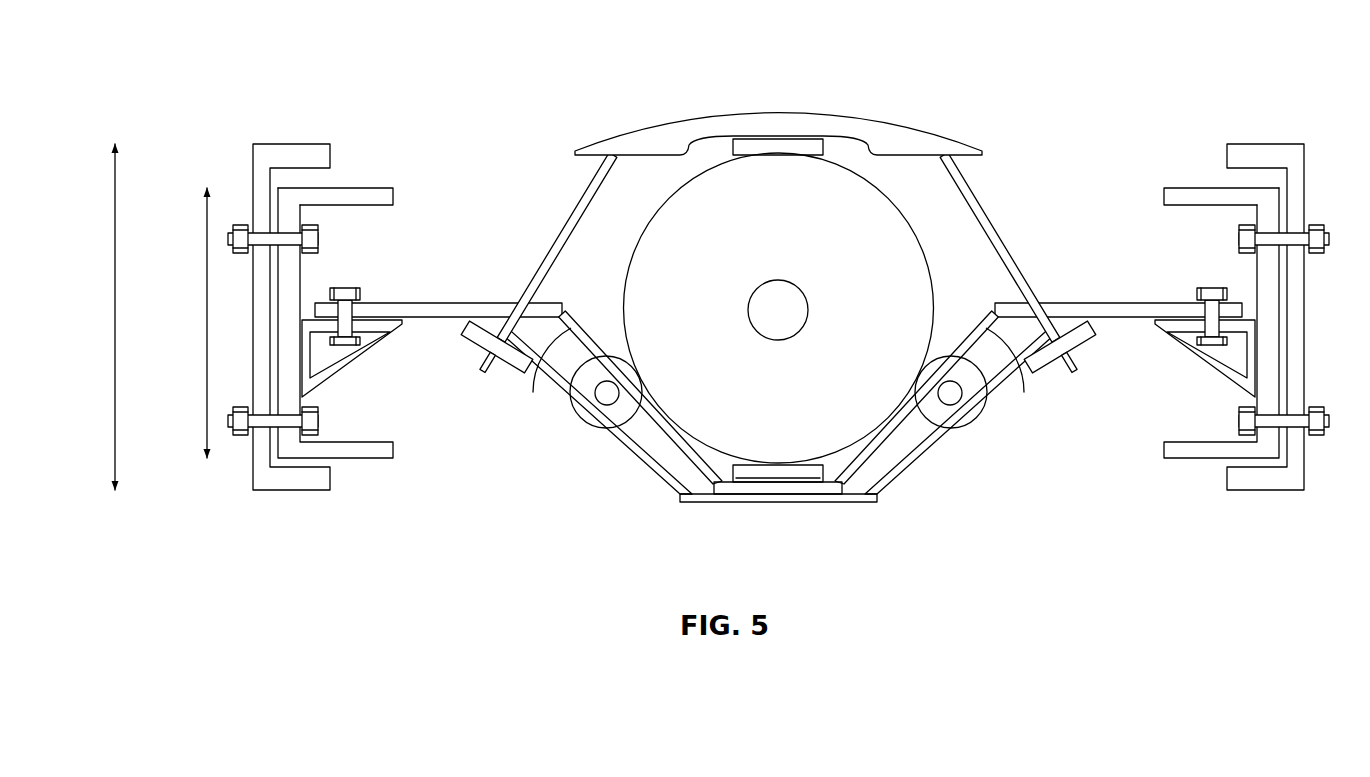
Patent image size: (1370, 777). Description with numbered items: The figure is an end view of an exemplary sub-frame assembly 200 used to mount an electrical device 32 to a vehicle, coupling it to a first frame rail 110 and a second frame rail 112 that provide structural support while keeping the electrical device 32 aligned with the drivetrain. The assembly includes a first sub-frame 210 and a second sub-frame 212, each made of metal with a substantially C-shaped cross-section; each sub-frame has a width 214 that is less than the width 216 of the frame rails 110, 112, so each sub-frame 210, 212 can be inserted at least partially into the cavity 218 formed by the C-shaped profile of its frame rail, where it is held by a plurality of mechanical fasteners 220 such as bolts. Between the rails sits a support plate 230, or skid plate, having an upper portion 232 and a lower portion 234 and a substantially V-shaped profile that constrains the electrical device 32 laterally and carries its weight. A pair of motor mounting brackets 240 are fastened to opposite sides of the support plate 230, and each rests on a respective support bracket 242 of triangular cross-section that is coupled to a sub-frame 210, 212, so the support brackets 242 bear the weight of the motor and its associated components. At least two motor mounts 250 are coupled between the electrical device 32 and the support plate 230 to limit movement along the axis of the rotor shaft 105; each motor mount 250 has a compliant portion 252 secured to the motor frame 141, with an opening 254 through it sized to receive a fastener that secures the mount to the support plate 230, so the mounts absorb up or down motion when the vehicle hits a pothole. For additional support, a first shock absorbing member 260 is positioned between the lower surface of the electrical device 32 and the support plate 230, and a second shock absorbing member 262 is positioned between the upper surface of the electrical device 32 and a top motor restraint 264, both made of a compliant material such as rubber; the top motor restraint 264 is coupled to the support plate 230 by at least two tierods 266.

The sub-frame assembly 200 is at (400, 53).
The first frame rail 110 is at (312, 152).
The second frame rail 112 is at (1248, 152).
The cavity 218 is at (325, 178).
The first sub-frame 210 is at (388, 198).
The second sub-frame 212 is at (1168, 198).
The mechanical fasteners 220 is at (320, 240).
The width of frame rails 216 is at (112, 298).
The width of sub-frame 214 is at (204, 322).
The motor mounting bracket 240 is at (440, 305).
The support bracket 242 is at (350, 355).
The upper portion 232 is at (571, 390).
The lower portion 234 is at (903, 484).
The support plate 230 is at (663, 505).
The motor mount 250 is at (609, 440).
The compliant portion 252 is at (592, 433).
The opening 254 is at (596, 402).
The tierods 266 is at (575, 222).
The motor frame 141 is at (1005, 276).
The top motor restraint 264 is at (950, 148).
The second shock absorbing member 262 is at (808, 140).
The rotor shaft 105 is at (780, 278).
The electrical device 32 is at (908, 270).
The first shock absorbing member 260 is at (808, 477).